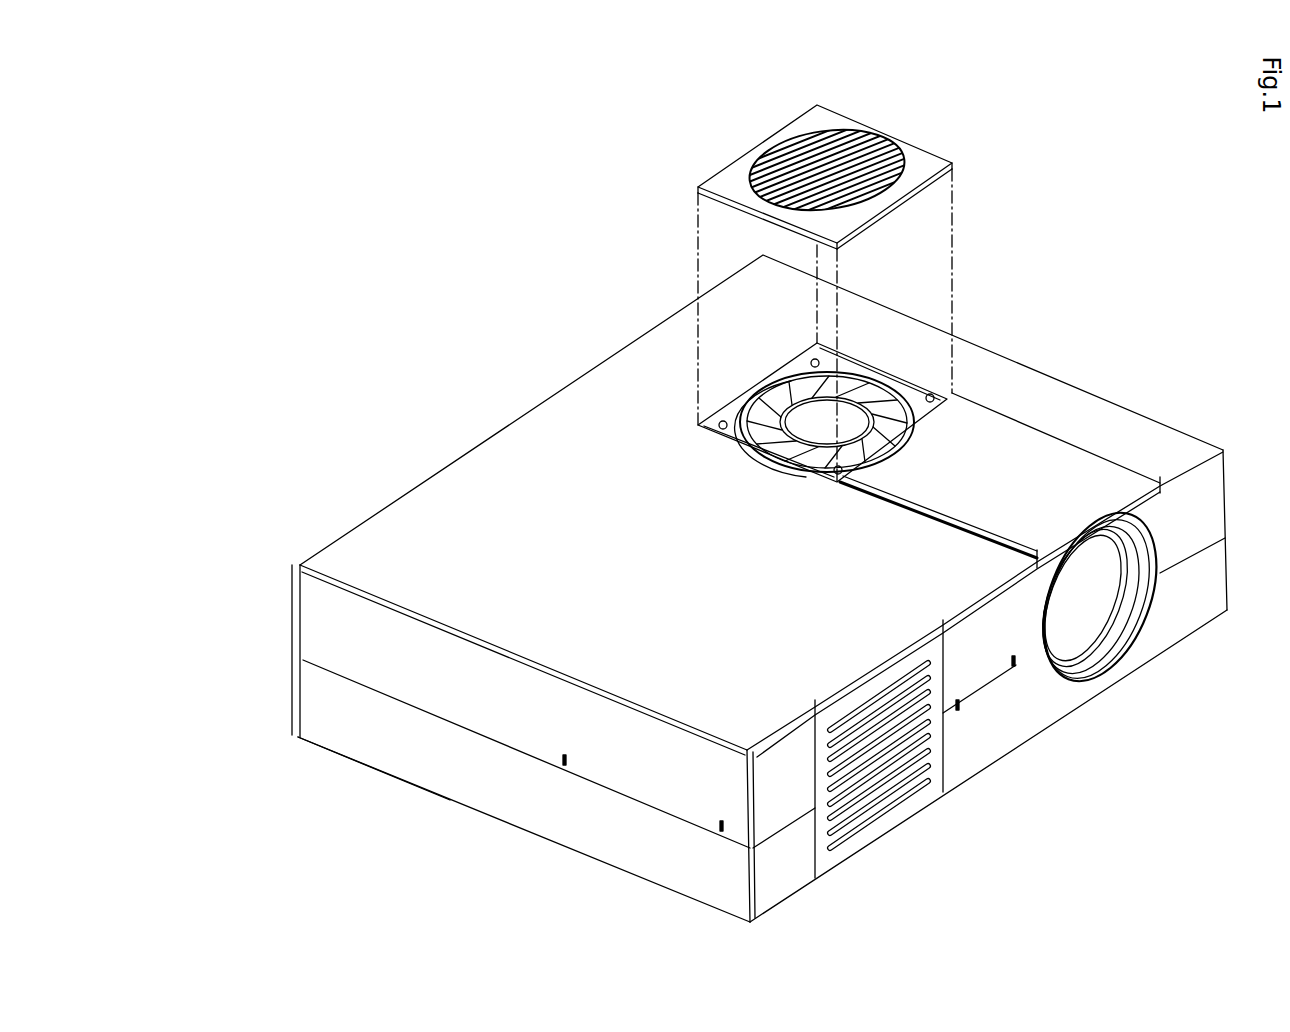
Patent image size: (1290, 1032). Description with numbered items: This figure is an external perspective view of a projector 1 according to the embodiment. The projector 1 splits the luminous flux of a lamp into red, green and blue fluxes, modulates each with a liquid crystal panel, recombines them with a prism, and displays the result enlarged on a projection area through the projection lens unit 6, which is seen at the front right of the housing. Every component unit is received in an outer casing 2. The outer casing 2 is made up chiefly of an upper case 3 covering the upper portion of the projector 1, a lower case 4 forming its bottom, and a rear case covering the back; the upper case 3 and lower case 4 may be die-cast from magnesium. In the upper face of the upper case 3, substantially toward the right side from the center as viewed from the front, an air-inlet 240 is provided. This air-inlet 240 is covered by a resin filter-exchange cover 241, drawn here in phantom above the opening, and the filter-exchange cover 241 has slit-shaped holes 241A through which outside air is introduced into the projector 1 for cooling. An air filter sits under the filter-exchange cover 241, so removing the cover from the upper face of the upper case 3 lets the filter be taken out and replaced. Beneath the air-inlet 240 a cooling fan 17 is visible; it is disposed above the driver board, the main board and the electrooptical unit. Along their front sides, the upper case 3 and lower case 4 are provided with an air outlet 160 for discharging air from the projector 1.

The projector 1 is at (1140, 380).
The outer casing 2 is at (262, 653).
The upper case 3 is at (312, 604).
The lower case 4 is at (327, 735).
The projection lens unit 6 is at (1088, 598).
The cooling fan 17 is at (807, 410).
The air outlet 160 is at (888, 835).
The air-inlet 240 is at (858, 340).
The filter-exchange cover 241 is at (933, 167).
The slit-shaped holes 241A is at (833, 148).